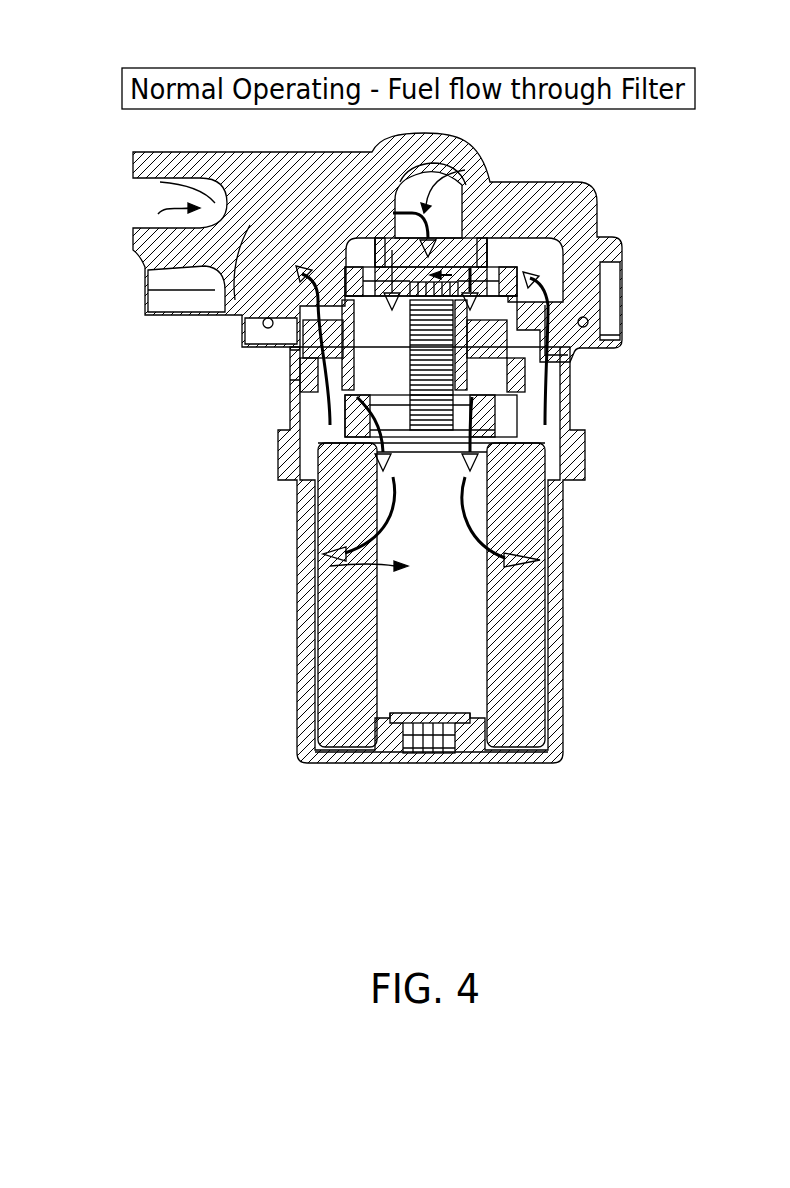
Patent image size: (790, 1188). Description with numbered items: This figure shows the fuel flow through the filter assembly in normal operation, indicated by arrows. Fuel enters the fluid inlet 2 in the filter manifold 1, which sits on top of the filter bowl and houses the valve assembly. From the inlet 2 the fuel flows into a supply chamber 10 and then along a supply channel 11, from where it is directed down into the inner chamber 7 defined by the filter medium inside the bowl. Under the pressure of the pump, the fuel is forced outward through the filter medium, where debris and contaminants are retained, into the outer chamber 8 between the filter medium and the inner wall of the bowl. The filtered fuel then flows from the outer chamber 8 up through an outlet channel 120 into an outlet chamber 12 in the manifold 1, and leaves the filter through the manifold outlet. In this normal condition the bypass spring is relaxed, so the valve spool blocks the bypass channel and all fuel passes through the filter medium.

The filter manifold 1 is at (466, 168).
The fluid inlet 2 is at (364, 224).
The inner chamber 7 is at (330, 566).
The outer chamber 8 is at (310, 488).
The supply chamber 10 is at (472, 186).
The supply channel 11 is at (565, 318).
The outlet chamber 12 is at (160, 211).
The outlet channel 120 is at (285, 353).